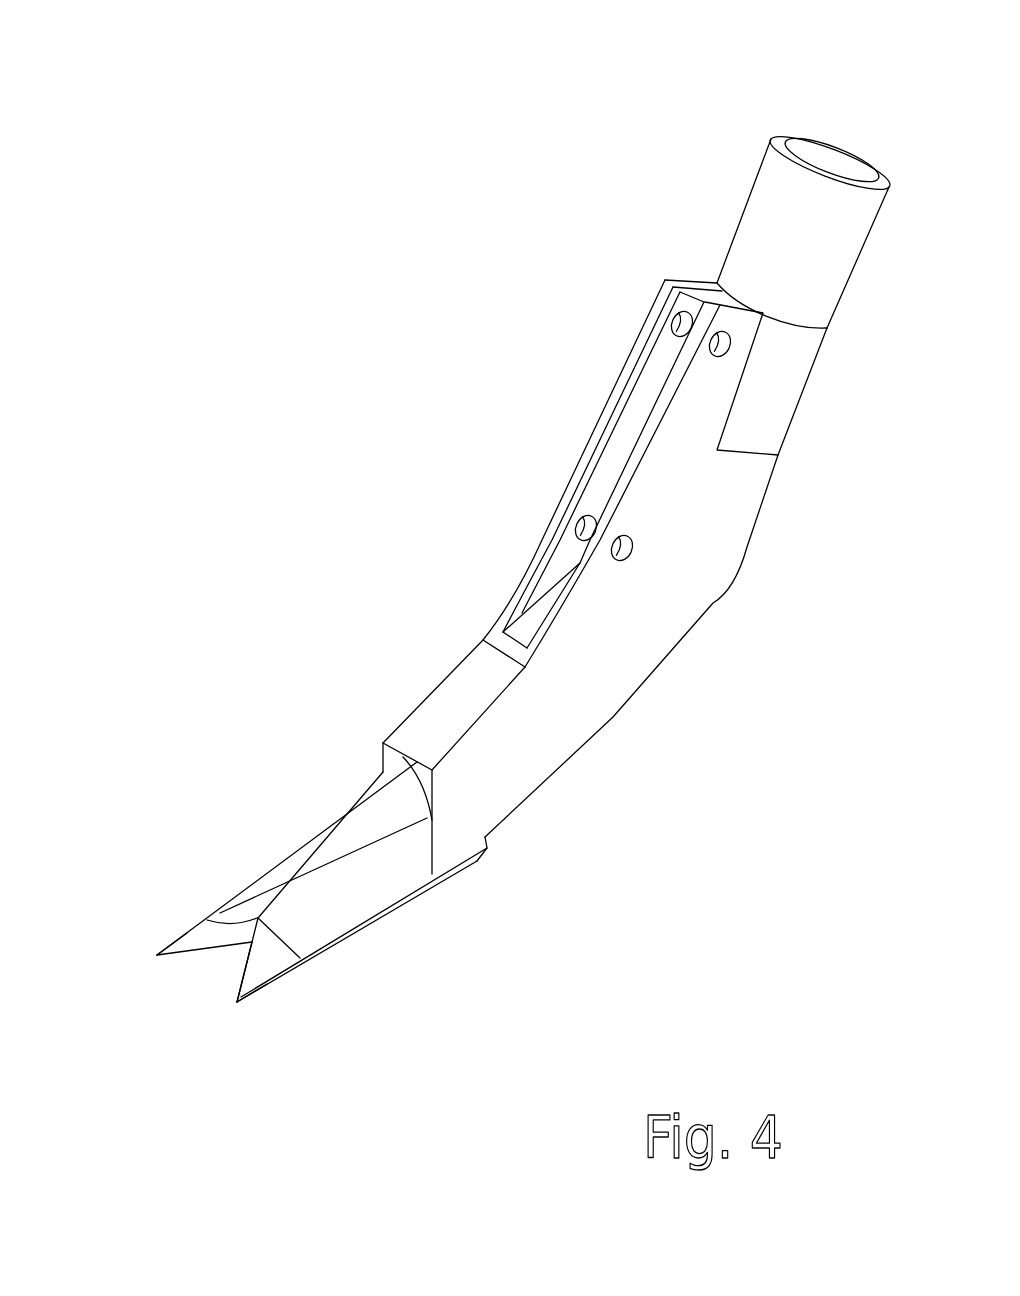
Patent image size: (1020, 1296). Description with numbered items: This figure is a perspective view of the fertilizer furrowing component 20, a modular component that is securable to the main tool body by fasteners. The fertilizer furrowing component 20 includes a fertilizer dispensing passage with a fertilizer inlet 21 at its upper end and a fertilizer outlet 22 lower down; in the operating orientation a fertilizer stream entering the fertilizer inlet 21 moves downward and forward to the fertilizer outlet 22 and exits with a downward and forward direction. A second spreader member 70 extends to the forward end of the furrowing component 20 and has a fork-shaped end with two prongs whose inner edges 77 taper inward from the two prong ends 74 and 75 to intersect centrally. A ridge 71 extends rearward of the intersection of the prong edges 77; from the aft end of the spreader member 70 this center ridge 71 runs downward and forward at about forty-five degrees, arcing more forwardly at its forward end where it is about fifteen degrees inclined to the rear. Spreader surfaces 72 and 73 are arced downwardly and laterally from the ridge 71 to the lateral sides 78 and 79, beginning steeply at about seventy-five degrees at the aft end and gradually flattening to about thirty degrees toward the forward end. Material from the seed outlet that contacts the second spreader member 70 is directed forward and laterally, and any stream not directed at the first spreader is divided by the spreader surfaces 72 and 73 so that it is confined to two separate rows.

The fertilizer furrowing component 20 is at (397, 447).
The fertilizer inlet 21 is at (822, 157).
The fertilizer outlet 22 is at (510, 817).
The second spreader member 70 is at (414, 876).
The ridge 71 is at (333, 842).
The spreader surface 72 is at (281, 886).
The spreader surface 73 is at (338, 910).
The prong end 74 is at (157, 956).
The prong end 75 is at (237, 1004).
The inner edges 77 is at (203, 935).
The lateral side 78 is at (260, 913).
The lateral side 79 is at (323, 958).